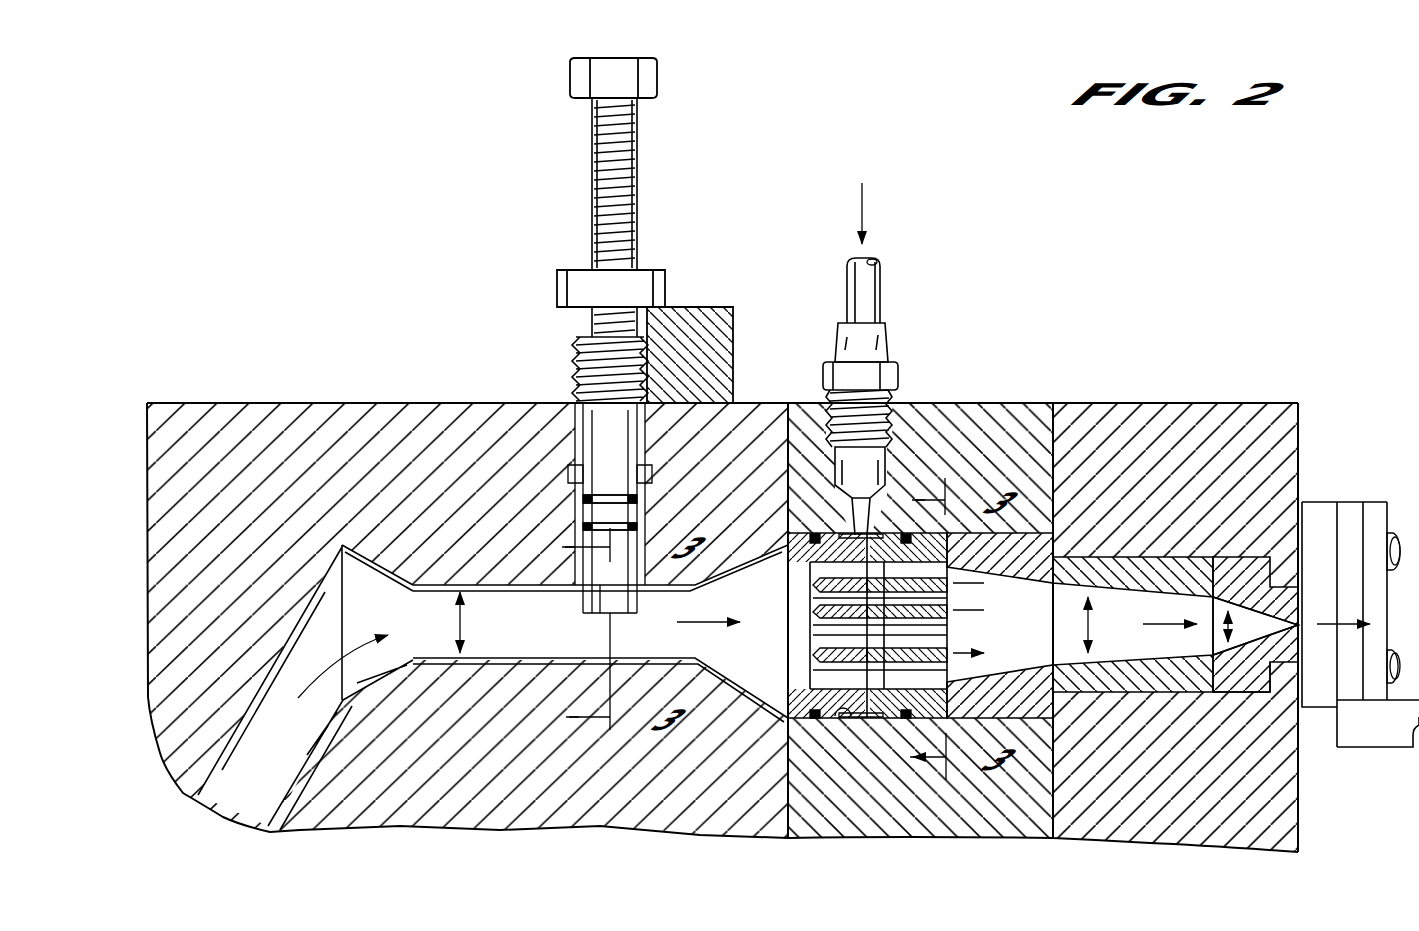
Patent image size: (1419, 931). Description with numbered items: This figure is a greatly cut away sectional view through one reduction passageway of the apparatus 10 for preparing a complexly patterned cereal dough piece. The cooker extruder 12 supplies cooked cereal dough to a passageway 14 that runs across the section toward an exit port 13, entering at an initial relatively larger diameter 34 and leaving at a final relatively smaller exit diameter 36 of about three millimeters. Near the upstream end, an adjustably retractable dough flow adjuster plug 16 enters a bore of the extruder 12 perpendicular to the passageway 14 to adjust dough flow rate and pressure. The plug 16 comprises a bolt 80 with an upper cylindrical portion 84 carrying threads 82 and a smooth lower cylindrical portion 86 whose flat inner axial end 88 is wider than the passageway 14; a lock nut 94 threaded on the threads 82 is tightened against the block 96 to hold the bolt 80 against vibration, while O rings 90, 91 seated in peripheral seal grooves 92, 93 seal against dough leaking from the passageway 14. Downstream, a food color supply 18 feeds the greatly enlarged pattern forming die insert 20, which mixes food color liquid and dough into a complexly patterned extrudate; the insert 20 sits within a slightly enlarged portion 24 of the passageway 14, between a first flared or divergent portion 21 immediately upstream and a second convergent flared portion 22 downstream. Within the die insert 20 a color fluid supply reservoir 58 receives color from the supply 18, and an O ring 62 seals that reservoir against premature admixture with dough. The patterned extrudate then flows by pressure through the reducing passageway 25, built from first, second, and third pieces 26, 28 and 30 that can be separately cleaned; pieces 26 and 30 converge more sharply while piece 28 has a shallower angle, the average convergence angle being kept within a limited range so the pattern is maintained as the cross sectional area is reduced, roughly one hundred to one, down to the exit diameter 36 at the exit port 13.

The apparatus 10 is at (746, 296).
The cooker extruder 12 is at (760, 401).
The exit port 13 is at (1300, 620).
The passageway 14 is at (493, 662).
The dough flow adjuster plug 16 is at (676, 268).
The food color supply 18 is at (882, 282).
The pattern forming die insert 20 is at (865, 535).
The first flared or divergent portion 21 is at (790, 578).
The second convergent flared portion 22 is at (990, 678).
The enlarged portion 24 is at (848, 718).
The reducing passageway 25 is at (1130, 579).
The first piece 26 is at (1037, 533).
The second piece 28 is at (1163, 693).
The third piece 30 is at (1257, 684).
The initial relatively larger diameter 34 is at (413, 618).
The exit diameter 36 is at (1292, 625).
The color fluid supply reservoir 58 is at (878, 536).
The O ring 62 is at (905, 536).
The bolt 80 is at (600, 121).
The threads 82 is at (637, 208).
The upper cylindrical portion 84 is at (637, 150).
The lower cylindrical portion 86 is at (595, 597).
The inner axial end 88 is at (600, 615).
The O ring 90 is at (638, 498).
The O ring 91 is at (638, 524).
The seal groove 92 is at (583, 500).
The seal groove 93 is at (583, 525).
The lock nut 94 is at (557, 290).
The block 96 is at (733, 338).